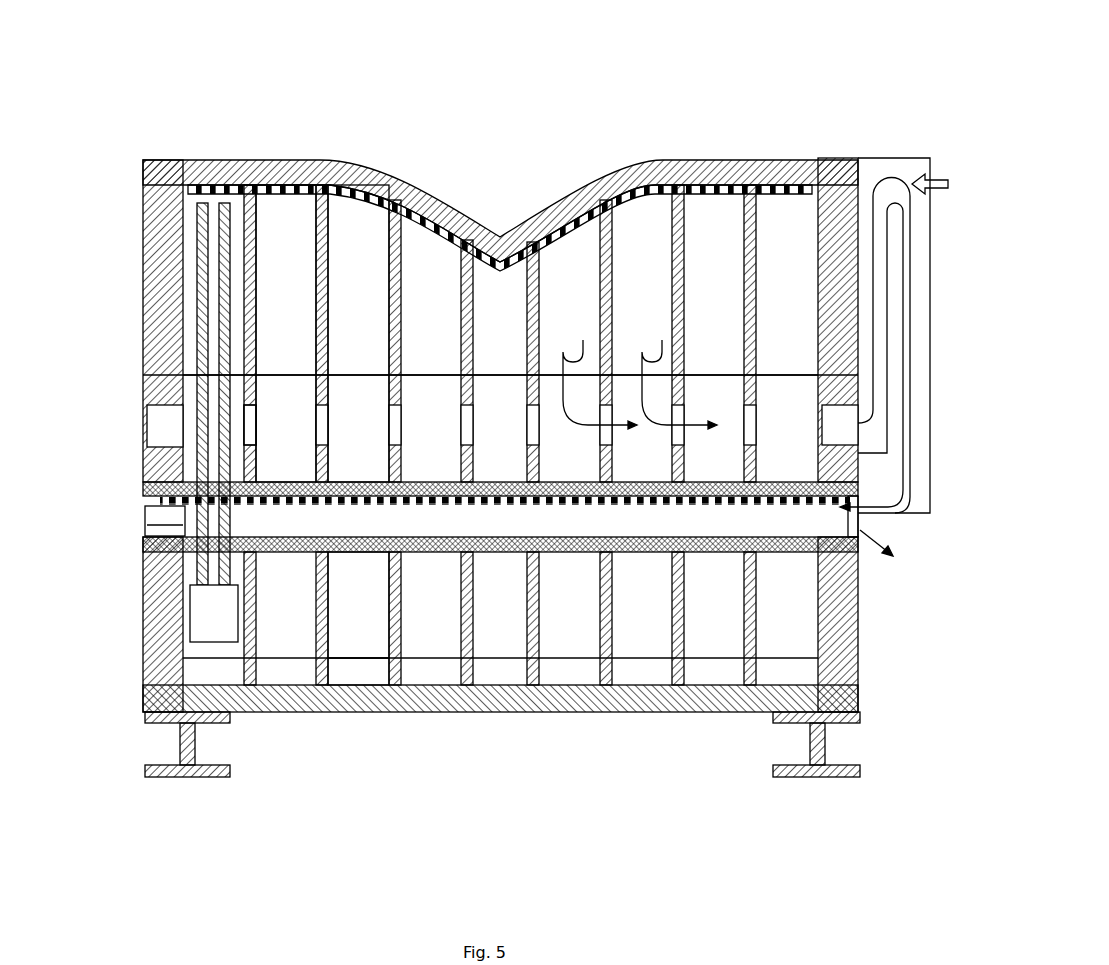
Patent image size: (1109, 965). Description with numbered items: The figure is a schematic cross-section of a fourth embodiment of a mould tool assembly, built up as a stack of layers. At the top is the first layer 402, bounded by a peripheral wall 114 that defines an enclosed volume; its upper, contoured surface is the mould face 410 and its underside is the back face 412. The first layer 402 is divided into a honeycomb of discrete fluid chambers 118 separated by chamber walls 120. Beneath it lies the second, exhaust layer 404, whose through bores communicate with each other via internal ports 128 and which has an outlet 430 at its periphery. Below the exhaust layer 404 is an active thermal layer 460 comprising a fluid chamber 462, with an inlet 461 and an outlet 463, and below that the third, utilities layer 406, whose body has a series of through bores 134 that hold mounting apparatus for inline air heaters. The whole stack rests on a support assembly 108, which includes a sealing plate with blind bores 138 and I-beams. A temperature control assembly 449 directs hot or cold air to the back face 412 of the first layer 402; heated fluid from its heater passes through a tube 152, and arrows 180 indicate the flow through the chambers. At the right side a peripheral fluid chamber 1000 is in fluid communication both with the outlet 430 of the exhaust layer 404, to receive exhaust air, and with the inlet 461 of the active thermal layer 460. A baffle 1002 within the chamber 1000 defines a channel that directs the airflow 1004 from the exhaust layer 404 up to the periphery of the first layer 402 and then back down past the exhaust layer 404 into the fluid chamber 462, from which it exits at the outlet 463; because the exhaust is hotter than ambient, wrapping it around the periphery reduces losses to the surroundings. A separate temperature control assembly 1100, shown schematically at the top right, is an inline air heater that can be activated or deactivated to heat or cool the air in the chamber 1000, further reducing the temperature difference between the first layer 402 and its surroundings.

The peripheral wall 114 is at (143, 190).
The first layer 402 is at (128, 258).
The tube 152 is at (197, 333).
The second (exhaust) layer 404 is at (128, 385).
The active thermal layer 460 is at (128, 525).
The third (utilities) layer 406 is at (128, 580).
The support assembly 108 is at (107, 660).
The mould face 410 is at (412, 178).
The back face 412 is at (292, 196).
The fluid chambers 118 is at (302, 306).
The chamber walls 120 is at (338, 277).
The temperature control assembly 449 is at (252, 410).
The internal ports 128 is at (389, 422).
The flow direction 180 is at (640, 375).
The airflow 1004 is at (887, 215).
The outlet 430 is at (832, 412).
The fluid chamber 462 is at (545, 533).
The inlet 461 is at (868, 518).
The outlet 463 is at (860, 543).
The peripheral fluid chamber 1000 is at (884, 158).
The baffle 1002 is at (830, 158).
The separate temperature control assembly 1100 is at (939, 163).
The through bores 134 is at (358, 605).
The blind bores 138 is at (358, 672).